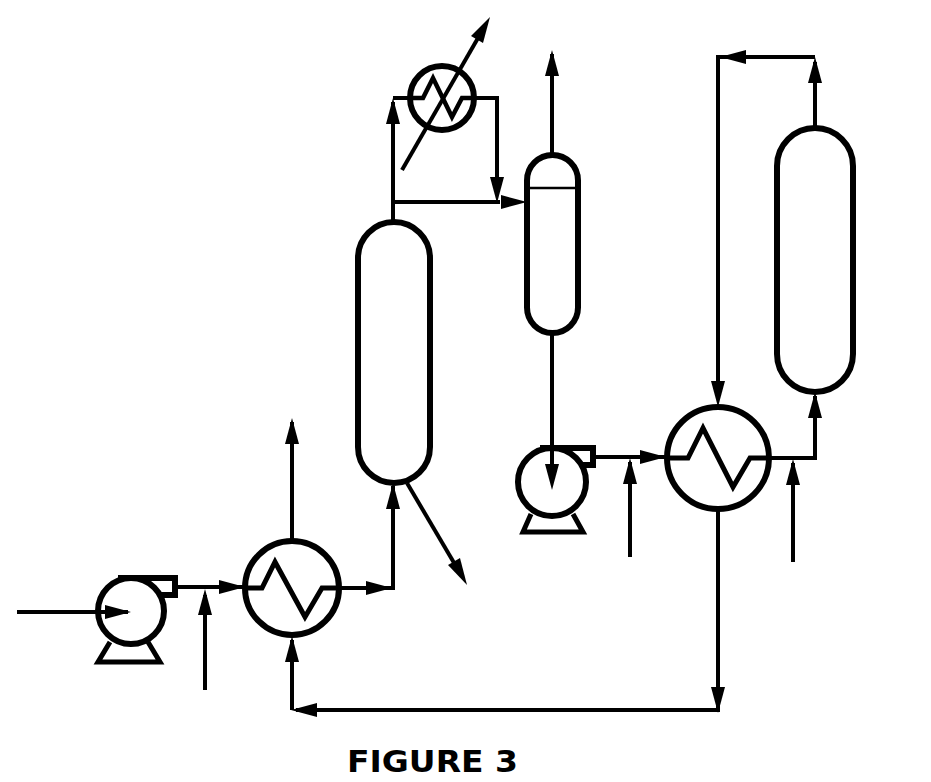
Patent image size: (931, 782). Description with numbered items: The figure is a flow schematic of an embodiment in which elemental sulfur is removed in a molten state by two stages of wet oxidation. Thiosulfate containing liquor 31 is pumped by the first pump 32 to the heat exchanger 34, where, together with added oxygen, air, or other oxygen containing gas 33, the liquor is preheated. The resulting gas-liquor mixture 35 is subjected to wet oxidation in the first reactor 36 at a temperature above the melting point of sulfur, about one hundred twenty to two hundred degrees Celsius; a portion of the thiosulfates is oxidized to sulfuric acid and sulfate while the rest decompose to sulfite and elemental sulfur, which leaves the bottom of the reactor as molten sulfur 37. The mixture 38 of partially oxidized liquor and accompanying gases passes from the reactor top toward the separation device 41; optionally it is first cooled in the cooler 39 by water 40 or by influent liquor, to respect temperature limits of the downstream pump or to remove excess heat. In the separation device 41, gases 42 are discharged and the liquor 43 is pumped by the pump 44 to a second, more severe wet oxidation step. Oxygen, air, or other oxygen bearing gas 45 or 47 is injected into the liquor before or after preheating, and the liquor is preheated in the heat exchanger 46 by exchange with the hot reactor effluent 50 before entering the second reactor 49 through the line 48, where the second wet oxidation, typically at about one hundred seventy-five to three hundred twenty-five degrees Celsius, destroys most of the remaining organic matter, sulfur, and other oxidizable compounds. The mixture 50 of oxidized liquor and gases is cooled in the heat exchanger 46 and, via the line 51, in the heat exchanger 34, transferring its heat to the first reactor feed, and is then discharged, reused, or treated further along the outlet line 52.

The thiosulfate containing liquor 31 is at (30, 612).
The first pump 32 is at (115, 587).
The oxygen containing gas 33 is at (203, 652).
The heat exchanger 34 is at (283, 555).
The gas-liquor mixture 35 is at (395, 555).
The first reactor 36 is at (375, 288).
The molten sulfur 37 is at (430, 510).
The mixture of partially oxidized liquor and gases 38 is at (430, 202).
The cooler 39 is at (427, 80).
The water 40 is at (470, 50).
The separation device 41 is at (560, 212).
The gases 42 is at (557, 115).
The liquor 43 is at (550, 390).
The pump 44 is at (565, 490).
The oxygen bearing gas 45 is at (632, 518).
The heat exchanger 46 is at (713, 423).
The oxygen bearing gas 47 is at (797, 515).
The line to vessel 49 48 is at (818, 428).
The second reactor 49 is at (803, 160).
The mixture of oxidized liquor and gases 50 is at (718, 295).
The bottoms recycle line 51 is at (720, 657).
The outlet line from heat exchanger 34 52 is at (288, 477).